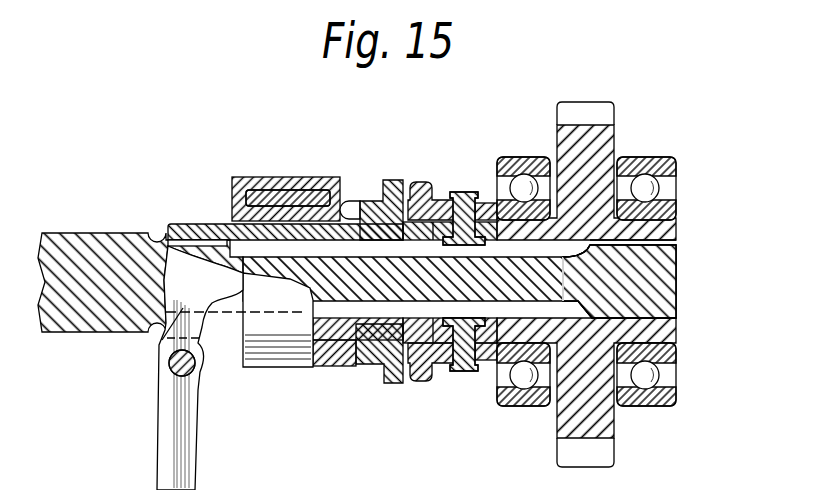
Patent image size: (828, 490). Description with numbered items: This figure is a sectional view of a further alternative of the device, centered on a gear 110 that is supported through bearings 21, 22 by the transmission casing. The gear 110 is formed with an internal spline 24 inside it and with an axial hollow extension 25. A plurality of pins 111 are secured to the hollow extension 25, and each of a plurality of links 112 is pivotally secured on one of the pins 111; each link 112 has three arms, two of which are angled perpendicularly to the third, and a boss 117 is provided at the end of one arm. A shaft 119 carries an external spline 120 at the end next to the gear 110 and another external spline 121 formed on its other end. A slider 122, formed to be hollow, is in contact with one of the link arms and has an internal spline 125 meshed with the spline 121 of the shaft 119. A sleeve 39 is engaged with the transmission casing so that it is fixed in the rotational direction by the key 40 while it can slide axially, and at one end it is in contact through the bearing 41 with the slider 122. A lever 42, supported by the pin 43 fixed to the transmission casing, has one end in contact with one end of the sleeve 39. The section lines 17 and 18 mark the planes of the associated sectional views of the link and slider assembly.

The section line 17- 17 is at (465, 160).
The section line 18- 18 is at (487, 108).
The bearing 21 is at (520, 158).
The bearing 22 is at (671, 173).
The internal spline 24 is at (664, 227).
The axial hollow extension 25 is at (528, 318).
The sleeve 39 is at (231, 214).
The key 40 is at (277, 196).
The bearing 41 is at (356, 202).
The lever 42 is at (193, 482).
The pin 43 is at (191, 370).
The gear 110 is at (602, 133).
The pin 111 is at (468, 245).
The link 112 is at (412, 240).
The boss 117 is at (426, 382).
The shaft 119 is at (652, 296).
The external spline 120 is at (660, 250).
The external spline 121 is at (172, 247).
The slider 122 is at (367, 356).
The internal spline 125 is at (200, 242).